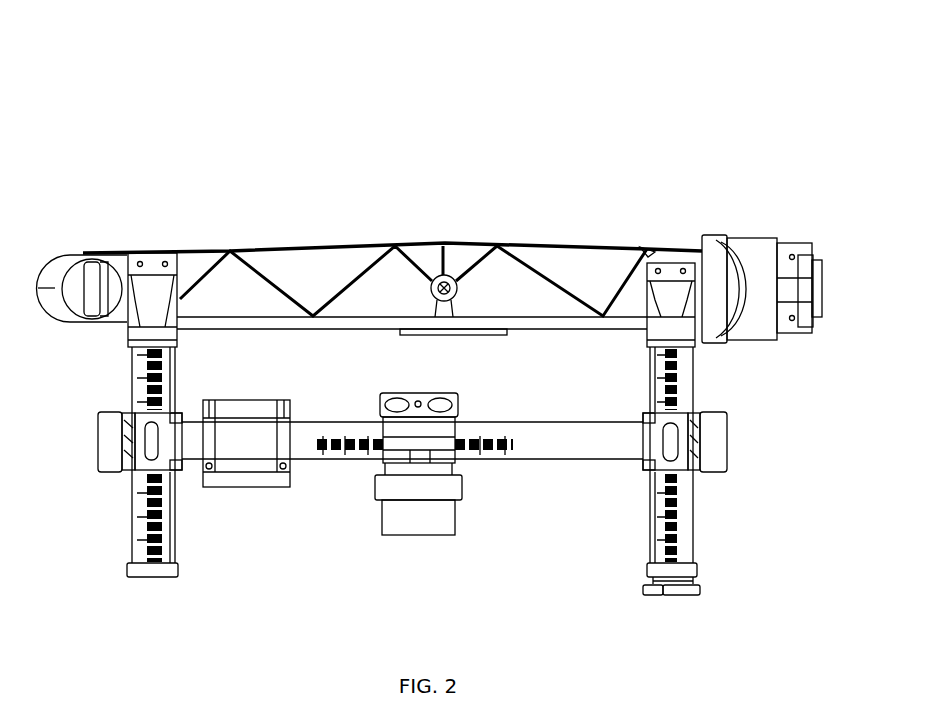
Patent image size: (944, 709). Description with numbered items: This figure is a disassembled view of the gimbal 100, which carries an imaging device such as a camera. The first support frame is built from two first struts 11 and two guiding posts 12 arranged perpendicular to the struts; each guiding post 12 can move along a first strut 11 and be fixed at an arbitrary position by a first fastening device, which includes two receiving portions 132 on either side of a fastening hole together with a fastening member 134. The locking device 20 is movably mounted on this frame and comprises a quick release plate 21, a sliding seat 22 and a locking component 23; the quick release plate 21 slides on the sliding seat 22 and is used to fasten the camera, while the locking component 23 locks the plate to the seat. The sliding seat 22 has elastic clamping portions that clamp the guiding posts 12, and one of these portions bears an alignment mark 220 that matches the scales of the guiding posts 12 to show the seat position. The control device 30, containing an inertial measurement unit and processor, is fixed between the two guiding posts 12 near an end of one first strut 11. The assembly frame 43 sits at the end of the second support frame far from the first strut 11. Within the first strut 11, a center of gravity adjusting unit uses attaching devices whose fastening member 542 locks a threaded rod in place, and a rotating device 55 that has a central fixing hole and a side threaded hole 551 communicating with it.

The gimbal 100 is at (416, 50).
The assembly frame 43 is at (643, 250).
The first strut 11 is at (688, 551).
The guiding post 12 is at (600, 447).
The receiving portion 132 is at (640, 422).
The fastening member 134 is at (715, 457).
The control device 30 is at (242, 487).
The locking device 20 is at (500, 568).
The quick release plate 21 is at (415, 417).
The sliding seat 22 is at (445, 478).
The locking component 23 is at (427, 515).
The alignment mark 220 is at (420, 437).
The rotating device 55 is at (700, 589).
The side threaded hole 551 is at (643, 590).
The fastening member 542 is at (663, 596).